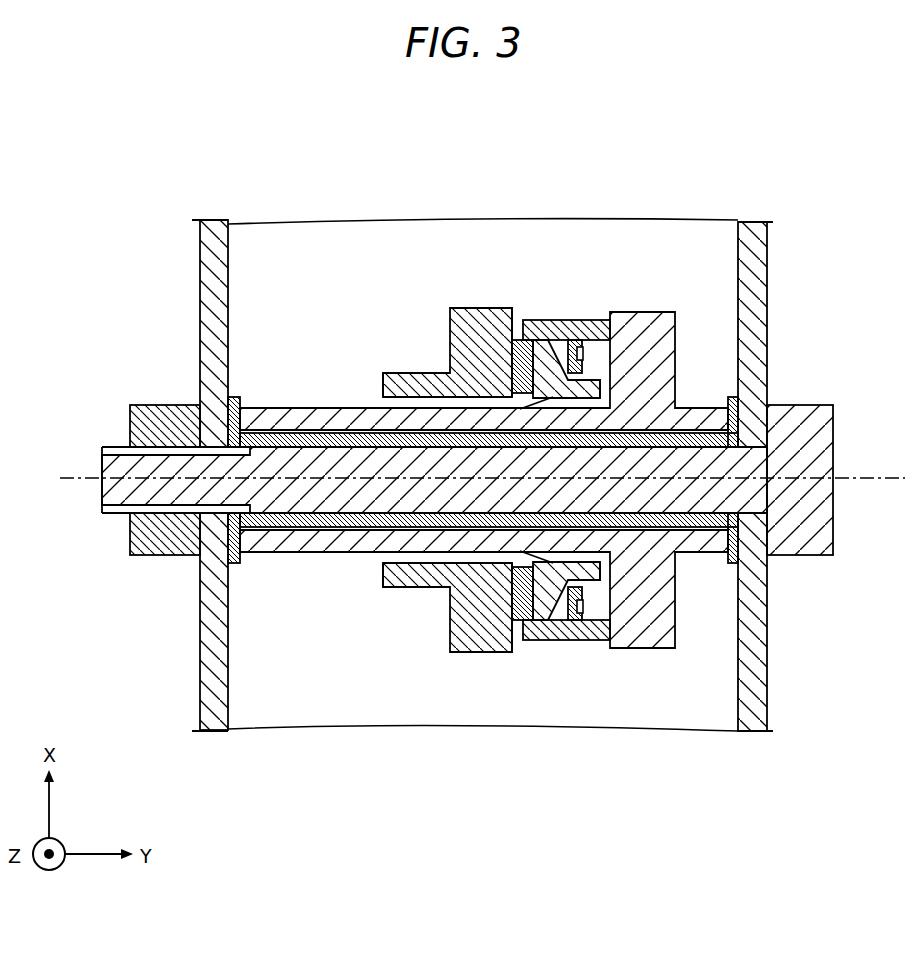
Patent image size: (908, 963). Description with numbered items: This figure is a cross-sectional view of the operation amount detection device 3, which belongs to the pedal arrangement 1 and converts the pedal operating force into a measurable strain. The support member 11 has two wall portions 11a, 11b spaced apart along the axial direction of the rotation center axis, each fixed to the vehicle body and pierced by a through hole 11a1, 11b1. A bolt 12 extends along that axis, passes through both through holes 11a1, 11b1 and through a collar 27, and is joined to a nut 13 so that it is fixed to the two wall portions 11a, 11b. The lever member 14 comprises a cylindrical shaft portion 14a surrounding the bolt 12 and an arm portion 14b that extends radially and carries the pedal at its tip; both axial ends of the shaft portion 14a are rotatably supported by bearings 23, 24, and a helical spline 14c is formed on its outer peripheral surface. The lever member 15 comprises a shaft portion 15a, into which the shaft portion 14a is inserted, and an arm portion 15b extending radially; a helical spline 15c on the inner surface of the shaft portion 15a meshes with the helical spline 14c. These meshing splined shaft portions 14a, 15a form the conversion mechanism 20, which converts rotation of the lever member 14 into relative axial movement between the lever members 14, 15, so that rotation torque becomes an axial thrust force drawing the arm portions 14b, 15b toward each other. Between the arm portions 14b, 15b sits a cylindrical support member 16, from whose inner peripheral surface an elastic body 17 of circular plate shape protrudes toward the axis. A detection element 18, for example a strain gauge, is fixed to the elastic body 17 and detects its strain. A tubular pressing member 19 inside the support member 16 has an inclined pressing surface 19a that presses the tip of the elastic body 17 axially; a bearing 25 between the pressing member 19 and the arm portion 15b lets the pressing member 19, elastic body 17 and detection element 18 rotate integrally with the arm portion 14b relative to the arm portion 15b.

The rotary device 1 is at (769, 133).
The operation amount detection device 3 is at (675, 178).
The support member 11 is at (200, 268).
The wall portion 11a is at (214, 475).
The through hole 11a1 is at (200, 547).
The wall portion 11b is at (767, 276).
The through hole 11b1 is at (767, 555).
The bolt 12 is at (793, 405).
The nut 13 is at (165, 405).
The lever member 14 is at (666, 650).
The shaft portion 14a is at (693, 552).
The arm portion 14b is at (484, 480).
The helical spline 14c is at (416, 432).
The lever member 15 is at (462, 652).
The shaft portion 15a is at (393, 590).
The arm portion 15b is at (481, 480).
The helical spline 15c is at (470, 398).
The support member 16 is at (523, 620).
The elastic body 17 is at (557, 617).
The detection element 18 is at (592, 620).
The pressing member 19 is at (570, 620).
The pressing surface 19a is at (580, 480).
The conversion mechanism 20 is at (372, 378).
The bearing 23 is at (238, 397).
The bearing 24 is at (735, 397).
The bearing 25 is at (521, 340).
The collar 27 is at (308, 515).